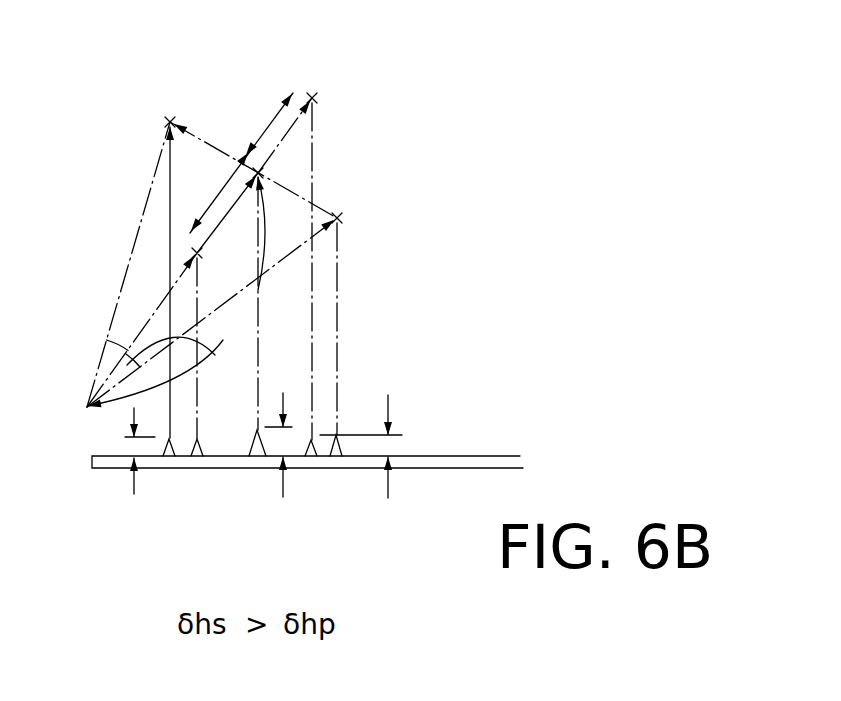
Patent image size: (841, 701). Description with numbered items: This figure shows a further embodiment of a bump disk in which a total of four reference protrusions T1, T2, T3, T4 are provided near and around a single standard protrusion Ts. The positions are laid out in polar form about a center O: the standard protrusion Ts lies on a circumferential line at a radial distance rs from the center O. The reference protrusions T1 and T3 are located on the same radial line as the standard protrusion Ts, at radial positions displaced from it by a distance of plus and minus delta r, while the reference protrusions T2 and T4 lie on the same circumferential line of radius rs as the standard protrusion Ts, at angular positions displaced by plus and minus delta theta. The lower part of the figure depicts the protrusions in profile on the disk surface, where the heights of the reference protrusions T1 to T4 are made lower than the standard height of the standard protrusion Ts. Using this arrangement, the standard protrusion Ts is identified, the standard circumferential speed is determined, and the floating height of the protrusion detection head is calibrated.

The origin (center of rotation) O is at (200, 283).
The standard protrusion Ts is at (253, 175).
The reference protrusion T1 is at (312, 95).
The reference protrusion T2 is at (340, 220).
The reference protrusion T3 is at (193, 253).
The reference protrusion T4 is at (165, 122).
The radial distance rs is at (166, 359).